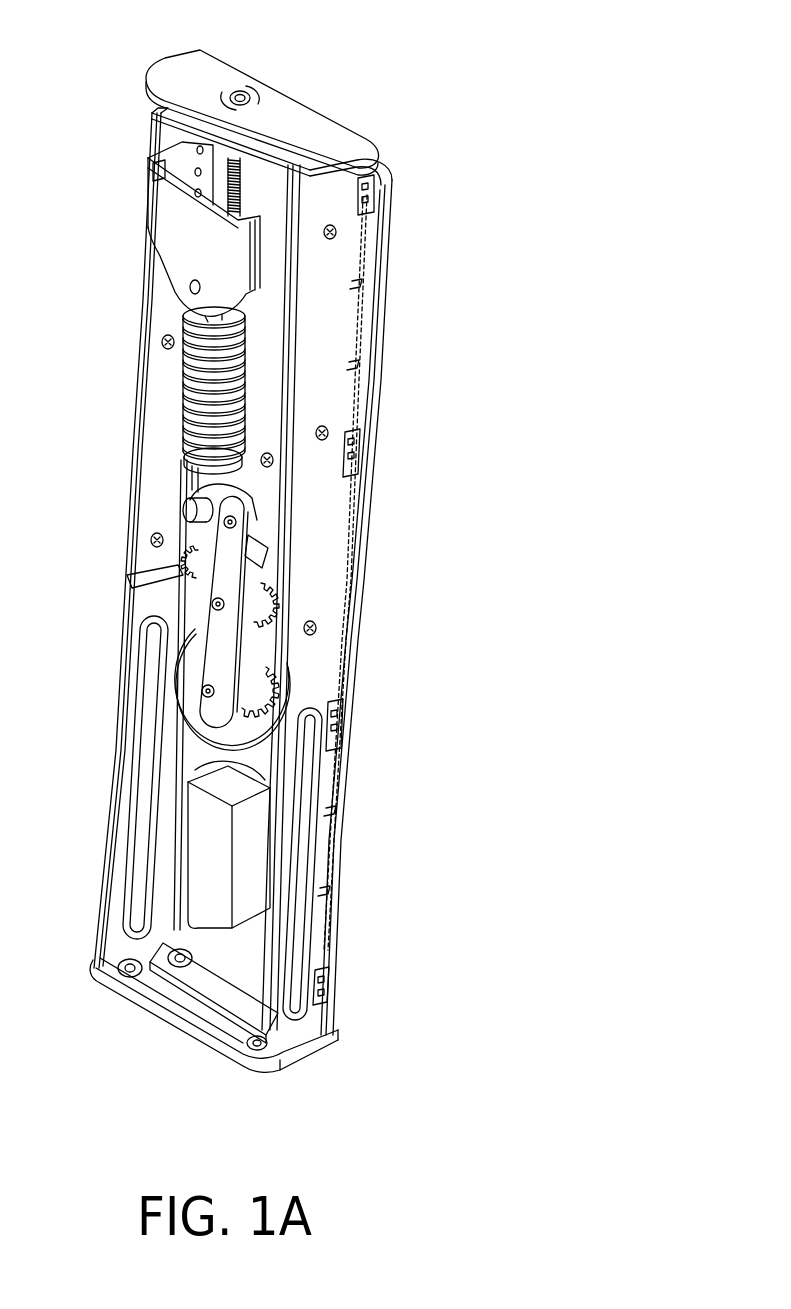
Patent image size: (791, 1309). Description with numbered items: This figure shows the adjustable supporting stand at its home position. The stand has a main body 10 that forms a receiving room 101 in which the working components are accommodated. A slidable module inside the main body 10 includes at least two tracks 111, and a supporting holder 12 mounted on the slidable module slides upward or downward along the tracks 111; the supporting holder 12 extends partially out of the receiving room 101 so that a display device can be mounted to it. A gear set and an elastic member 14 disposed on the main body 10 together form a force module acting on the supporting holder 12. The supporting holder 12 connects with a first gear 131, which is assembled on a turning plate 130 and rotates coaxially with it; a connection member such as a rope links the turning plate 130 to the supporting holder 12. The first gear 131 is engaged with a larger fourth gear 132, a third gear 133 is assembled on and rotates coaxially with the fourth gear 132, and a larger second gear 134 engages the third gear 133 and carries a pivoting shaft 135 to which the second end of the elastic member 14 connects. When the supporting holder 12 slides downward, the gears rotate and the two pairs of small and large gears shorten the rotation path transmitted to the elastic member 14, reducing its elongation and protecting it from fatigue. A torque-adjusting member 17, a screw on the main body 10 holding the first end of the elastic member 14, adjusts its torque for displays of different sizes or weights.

The main body 10 is at (393, 168).
The supporting holder 12 is at (160, 197).
The elastic member 14 is at (170, 387).
The torque-adjusting member 17 is at (240, 92).
The receiving room 101 is at (235, 955).
The tracks 111 is at (160, 470).
The turning plate 130 is at (190, 655).
The first gear 131 is at (257, 708).
The fourth gear 132 is at (180, 582).
The third gear 133 is at (262, 606).
The second gear 134 is at (265, 556).
The pivoting shaft 135 is at (185, 510).